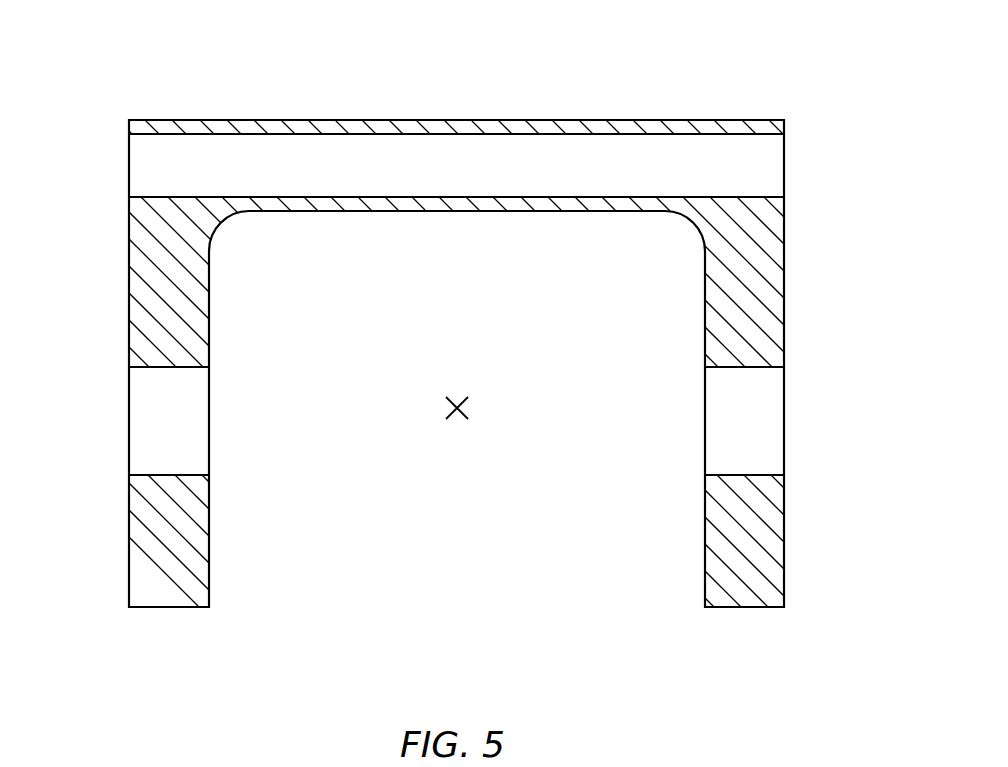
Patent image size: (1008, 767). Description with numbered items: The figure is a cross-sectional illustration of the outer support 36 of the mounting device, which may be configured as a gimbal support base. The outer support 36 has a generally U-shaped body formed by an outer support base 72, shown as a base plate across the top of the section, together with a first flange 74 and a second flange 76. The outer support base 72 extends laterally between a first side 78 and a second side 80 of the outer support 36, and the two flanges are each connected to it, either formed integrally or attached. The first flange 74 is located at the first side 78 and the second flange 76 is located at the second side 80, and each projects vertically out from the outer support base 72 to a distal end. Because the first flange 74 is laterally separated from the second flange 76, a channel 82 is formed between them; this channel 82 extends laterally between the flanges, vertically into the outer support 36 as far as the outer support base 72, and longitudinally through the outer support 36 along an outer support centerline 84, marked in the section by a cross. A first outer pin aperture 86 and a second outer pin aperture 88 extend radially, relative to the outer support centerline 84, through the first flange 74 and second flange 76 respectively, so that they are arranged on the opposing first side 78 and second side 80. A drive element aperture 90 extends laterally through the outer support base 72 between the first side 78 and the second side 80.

The outer support 36 is at (797, 86).
The outer support base 72 is at (588, 117).
The drive element aperture 90 is at (682, 147).
The first side 78 is at (129, 240).
The second side 80 is at (784, 243).
The first outer pin aperture 86 is at (147, 430).
The second outer pin aperture 88 is at (767, 433).
The first flange 74 is at (127, 559).
The second flange 76 is at (786, 545).
The channel 82 is at (323, 589).
The outer support centerline 84 is at (468, 408).